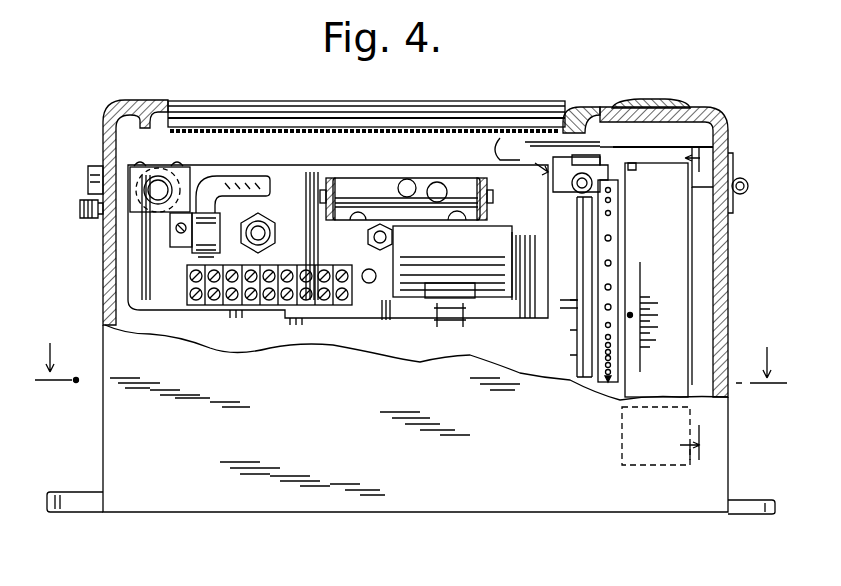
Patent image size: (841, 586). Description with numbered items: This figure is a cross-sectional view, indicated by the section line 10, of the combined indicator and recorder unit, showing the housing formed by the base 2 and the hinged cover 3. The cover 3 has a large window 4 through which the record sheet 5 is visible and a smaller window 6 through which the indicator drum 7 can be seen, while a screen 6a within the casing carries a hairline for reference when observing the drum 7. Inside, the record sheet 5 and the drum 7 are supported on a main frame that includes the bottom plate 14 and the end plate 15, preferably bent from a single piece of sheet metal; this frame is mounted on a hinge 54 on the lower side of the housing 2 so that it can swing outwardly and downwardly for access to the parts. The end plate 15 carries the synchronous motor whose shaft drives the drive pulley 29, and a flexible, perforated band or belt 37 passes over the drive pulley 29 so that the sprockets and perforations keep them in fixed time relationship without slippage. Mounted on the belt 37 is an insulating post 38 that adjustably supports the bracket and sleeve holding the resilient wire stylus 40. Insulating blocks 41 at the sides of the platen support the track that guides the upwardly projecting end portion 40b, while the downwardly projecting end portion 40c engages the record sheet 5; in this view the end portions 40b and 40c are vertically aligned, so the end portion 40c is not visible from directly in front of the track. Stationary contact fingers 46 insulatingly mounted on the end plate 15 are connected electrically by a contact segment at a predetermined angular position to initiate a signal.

The base 2 is at (103, 250).
The hinged cover 3 is at (103, 128).
The large window 4 is at (470, 130).
The record sheet 5 is at (661, 306).
The smaller window 6 is at (645, 100).
The screen 6a is at (660, 150).
The indicator drum 7 is at (678, 228).
The section line 10 is at (411, 354).
The bottom plate 14 is at (156, 295).
The end plate 15 is at (578, 312).
The drive pulley 29 is at (600, 380).
The band or belt 37 is at (606, 385).
The post 38 is at (622, 165).
The stylus 40 is at (560, 160).
The upwardly projecting end portion 40b is at (586, 160).
The downwardly projecting end portion 40c is at (585, 195).
The insulating blocks 41 is at (500, 160).
The stationary contact fingers 46 is at (580, 372).
The hinge 54 is at (378, 200).